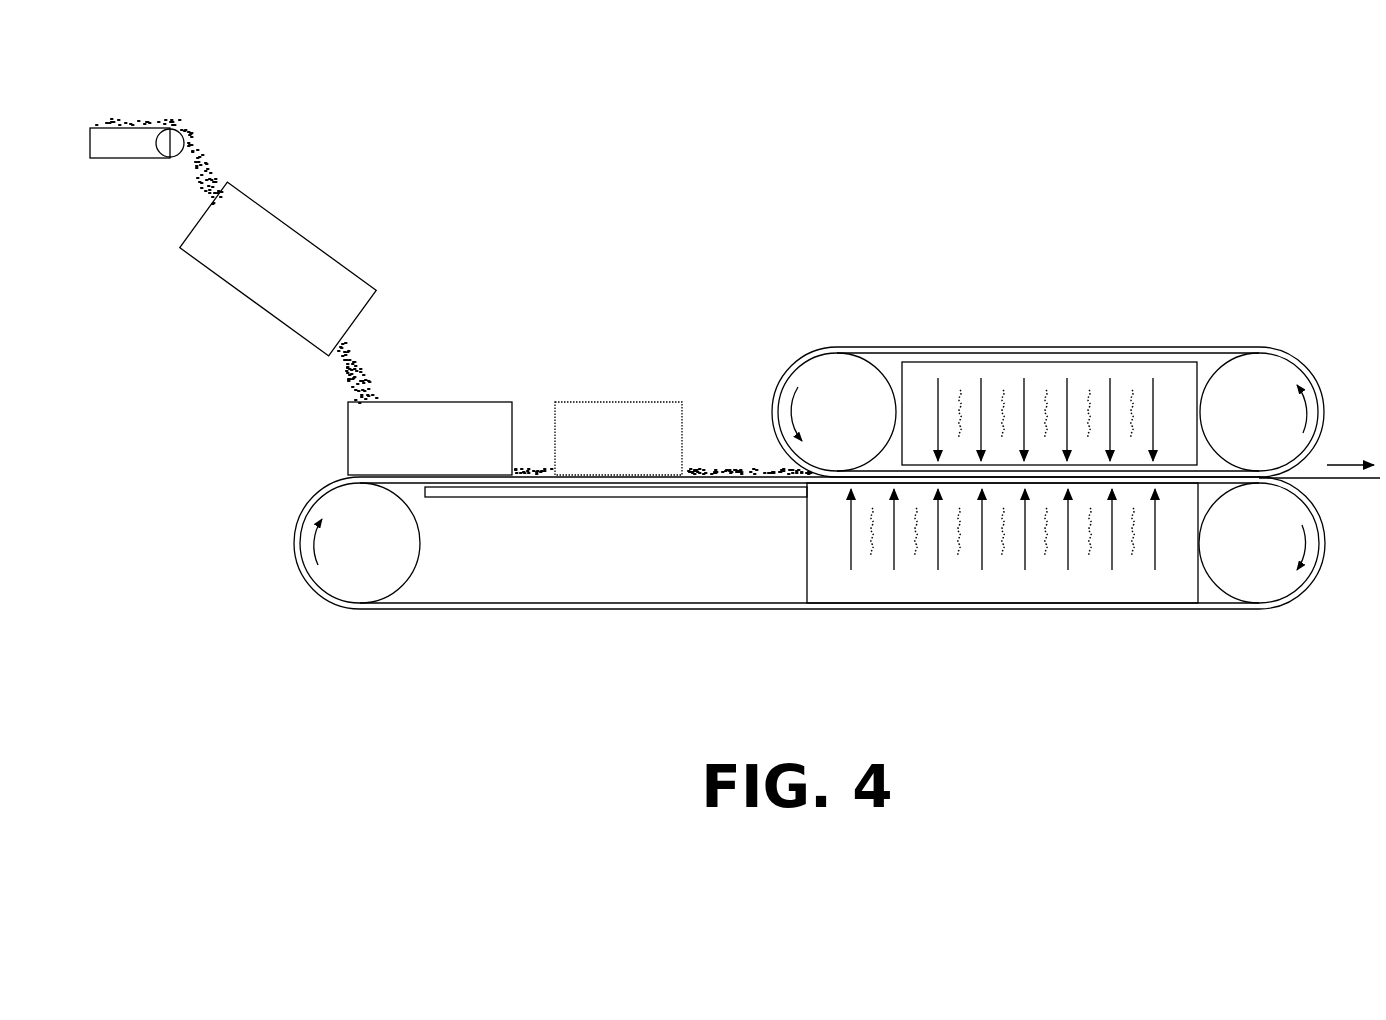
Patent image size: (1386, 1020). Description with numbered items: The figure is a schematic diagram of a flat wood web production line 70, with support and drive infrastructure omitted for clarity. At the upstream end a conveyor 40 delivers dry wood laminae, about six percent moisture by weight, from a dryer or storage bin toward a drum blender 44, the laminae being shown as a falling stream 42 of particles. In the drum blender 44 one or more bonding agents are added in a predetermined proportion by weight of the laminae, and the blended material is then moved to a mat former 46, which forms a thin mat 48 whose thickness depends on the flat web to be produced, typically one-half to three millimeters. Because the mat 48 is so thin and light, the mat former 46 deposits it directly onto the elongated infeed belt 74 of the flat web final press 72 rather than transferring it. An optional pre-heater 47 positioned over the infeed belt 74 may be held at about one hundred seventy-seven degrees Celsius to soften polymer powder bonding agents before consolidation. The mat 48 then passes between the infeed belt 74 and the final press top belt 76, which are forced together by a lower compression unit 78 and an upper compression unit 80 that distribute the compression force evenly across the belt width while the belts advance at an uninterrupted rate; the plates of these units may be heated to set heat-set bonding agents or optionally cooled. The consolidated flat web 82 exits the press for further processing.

The conveyor 40 is at (152, 160).
The particle stream 42 is at (222, 154).
The drum blender 44 is at (293, 223).
The mat former 46 is at (425, 400).
The pre-heater 47 is at (587, 402).
The mat 48 is at (725, 466).
The flat wood web production line 70 is at (897, 209).
The flat web final press 72 is at (1232, 344).
The infeed belt 74 is at (555, 612).
The final press top belt 76 is at (1100, 345).
The lower compression unit 78 is at (1075, 587).
The upper compression unit 80 is at (1015, 380).
The flat web 82 is at (1333, 480).